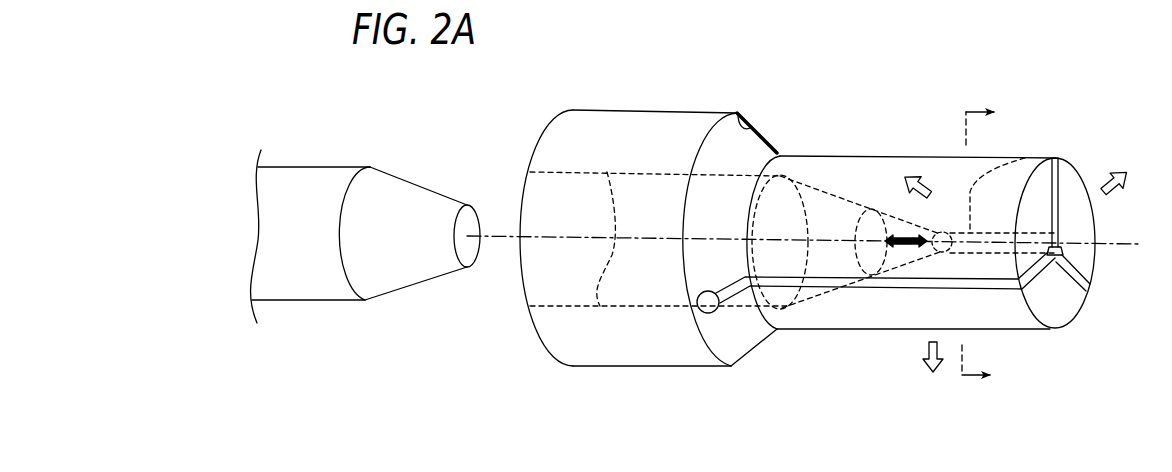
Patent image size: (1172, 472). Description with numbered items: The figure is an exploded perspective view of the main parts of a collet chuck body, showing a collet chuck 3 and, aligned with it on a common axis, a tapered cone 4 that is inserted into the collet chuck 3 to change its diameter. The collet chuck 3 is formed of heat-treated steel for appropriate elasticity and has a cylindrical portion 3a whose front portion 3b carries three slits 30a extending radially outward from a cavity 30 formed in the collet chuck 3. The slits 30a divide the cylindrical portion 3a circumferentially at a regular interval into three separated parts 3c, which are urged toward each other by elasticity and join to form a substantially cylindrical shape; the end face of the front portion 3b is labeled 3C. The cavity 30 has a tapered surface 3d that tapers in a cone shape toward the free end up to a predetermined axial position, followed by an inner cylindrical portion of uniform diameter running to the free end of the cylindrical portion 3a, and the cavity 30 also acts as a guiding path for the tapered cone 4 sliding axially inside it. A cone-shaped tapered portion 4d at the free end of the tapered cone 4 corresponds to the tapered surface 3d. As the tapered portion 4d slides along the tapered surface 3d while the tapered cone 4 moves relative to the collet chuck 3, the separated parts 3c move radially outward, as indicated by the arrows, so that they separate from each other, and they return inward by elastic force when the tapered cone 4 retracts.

The collet chuck 3 is at (838, 222).
The cylindrical portion 3a is at (806, 153).
The front portion 3b is at (926, 237).
The separated parts 3c is at (897, 315).
The nozzle body end face 3C is at (1088, 222).
The tapered surface 3d is at (832, 190).
The cavity 30 is at (642, 172).
The slits 30a is at (1056, 178).
The tapered cone 4 is at (365, 207).
The tapered portion 4d is at (420, 226).